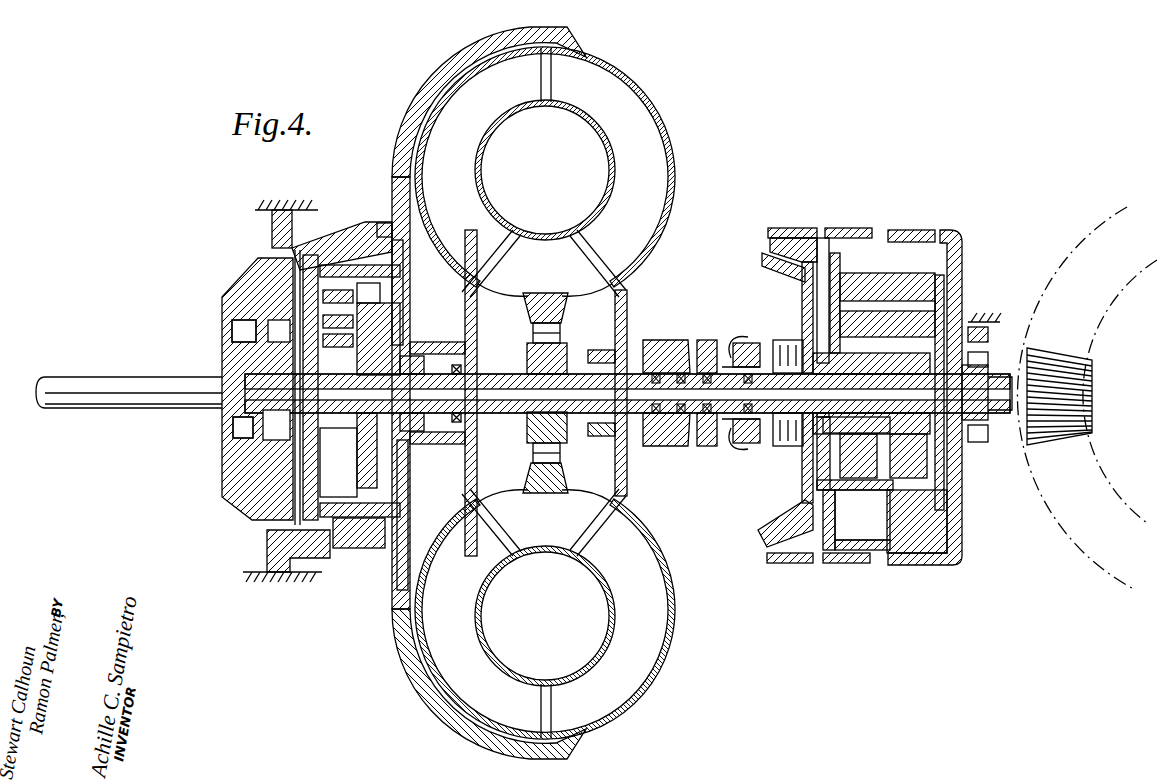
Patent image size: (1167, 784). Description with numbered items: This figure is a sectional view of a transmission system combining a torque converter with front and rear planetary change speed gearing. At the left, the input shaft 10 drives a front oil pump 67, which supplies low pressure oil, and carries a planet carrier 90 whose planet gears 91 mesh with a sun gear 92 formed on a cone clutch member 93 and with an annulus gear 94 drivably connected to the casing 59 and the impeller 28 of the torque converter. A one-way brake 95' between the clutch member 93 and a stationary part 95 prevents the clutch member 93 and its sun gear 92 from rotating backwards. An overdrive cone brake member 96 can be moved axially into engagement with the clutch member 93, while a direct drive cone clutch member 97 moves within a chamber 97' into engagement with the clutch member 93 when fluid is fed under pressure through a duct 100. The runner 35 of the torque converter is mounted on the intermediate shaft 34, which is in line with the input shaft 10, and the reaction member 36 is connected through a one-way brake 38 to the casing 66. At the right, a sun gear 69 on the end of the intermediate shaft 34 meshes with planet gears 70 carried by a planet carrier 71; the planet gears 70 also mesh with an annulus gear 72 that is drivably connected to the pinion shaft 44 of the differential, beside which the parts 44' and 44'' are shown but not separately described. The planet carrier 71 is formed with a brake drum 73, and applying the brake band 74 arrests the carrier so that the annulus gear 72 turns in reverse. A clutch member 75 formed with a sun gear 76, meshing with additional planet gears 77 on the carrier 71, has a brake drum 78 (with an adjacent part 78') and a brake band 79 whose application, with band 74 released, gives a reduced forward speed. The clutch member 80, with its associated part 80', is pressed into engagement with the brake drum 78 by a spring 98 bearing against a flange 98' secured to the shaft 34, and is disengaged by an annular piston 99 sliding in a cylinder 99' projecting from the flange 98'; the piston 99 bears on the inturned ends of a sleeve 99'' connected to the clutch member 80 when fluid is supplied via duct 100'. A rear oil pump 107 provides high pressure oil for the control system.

The input shaft 10 is at (119, 385).
The impeller 28 is at (612, 101).
The intermediate shaft 34 is at (620, 378).
The runner 35 is at (470, 106).
The reaction member 36 is at (544, 393).
The one-way brake 38 is at (533, 333).
The pinion shaft 44 is at (991, 406).
The bevel gear 44' is at (1059, 415).
The mating gear pitch circle 44'' is at (1087, 397).
The casing 59 is at (442, 76).
The casing 66 is at (653, 447).
The front oil pump 67 is at (233, 430).
The sun gear 69 is at (950, 337).
The planet gears 70 is at (912, 540).
The planet carrier 71 is at (937, 300).
The annulus gear 72 is at (903, 243).
The brake drum 73 is at (842, 237).
The brake band 74 is at (856, 561).
The clutch member 75 is at (798, 500).
The sun gear 76 is at (862, 446).
The planet gears 77 is at (900, 283).
The brake drum 78 is at (792, 227).
The pressure plate web 78' is at (830, 304).
The brake band 79 is at (794, 560).
The clutch member 80 is at (844, 382).
The sleeve flange 80' is at (757, 258).
The planet carrier 90 is at (375, 329).
The planet gears 91 is at (353, 297).
The sun gear 92 is at (342, 432).
The cone clutch member 93 is at (298, 262).
The annulus gear 94 is at (408, 274).
The stationary part 95 is at (237, 389).
The one-way brake 95' is at (217, 329).
The overdrive cone brake member 96 is at (276, 229).
The direct drive cone clutch member 97 is at (384, 529).
The chamber 97' is at (318, 559).
The spring 98 is at (781, 413).
The flange 98' is at (761, 463).
The annular piston 99 is at (736, 452).
The cylinder 99' is at (743, 336).
The sleeve 99'' is at (722, 437).
The duct 100 is at (695, 444).
The duct 100' is at (699, 339).
The rear oil pump 107 is at (981, 443).